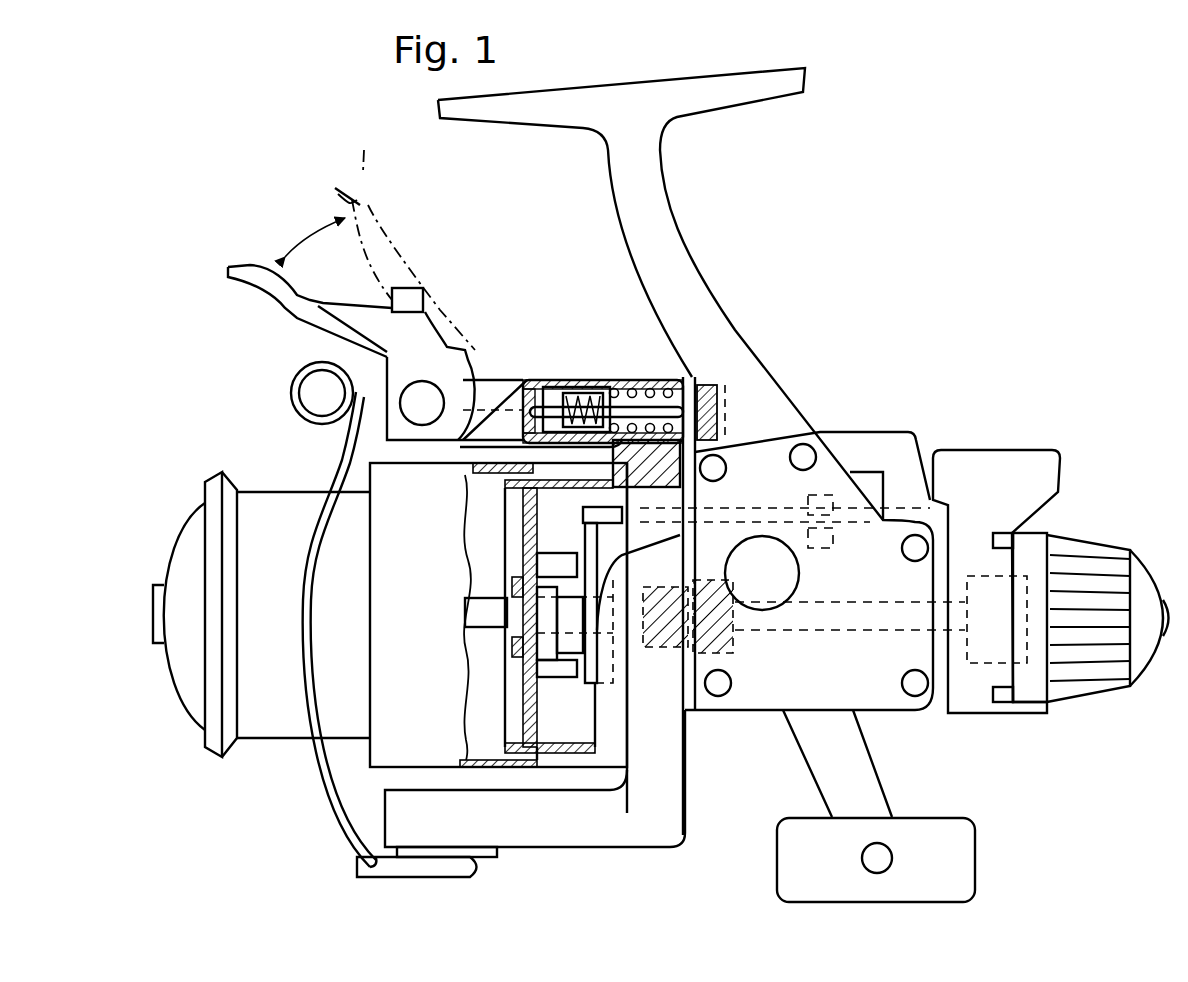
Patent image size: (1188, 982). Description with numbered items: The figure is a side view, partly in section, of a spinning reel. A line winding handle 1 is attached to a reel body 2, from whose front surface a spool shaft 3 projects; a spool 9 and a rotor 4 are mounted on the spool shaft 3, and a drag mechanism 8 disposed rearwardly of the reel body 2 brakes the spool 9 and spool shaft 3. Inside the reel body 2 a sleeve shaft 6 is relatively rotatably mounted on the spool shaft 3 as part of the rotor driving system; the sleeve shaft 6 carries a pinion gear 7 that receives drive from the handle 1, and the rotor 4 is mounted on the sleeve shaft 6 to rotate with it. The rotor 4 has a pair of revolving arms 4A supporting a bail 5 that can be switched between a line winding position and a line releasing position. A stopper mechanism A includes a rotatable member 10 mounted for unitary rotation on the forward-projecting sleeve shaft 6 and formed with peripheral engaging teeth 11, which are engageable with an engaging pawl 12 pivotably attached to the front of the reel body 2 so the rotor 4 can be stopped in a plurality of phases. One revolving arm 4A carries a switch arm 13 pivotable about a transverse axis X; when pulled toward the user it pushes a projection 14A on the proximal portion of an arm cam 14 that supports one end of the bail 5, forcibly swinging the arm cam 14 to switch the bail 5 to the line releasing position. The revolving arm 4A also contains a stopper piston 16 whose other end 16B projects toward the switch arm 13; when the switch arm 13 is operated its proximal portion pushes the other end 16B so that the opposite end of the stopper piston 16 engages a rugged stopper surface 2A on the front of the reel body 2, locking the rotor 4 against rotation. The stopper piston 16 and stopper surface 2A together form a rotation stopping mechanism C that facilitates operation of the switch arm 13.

The line winding handle 1 is at (873, 793).
The reel body 2 is at (790, 405).
The stopper surface 2A is at (700, 372).
The spool shaft 3 is at (488, 602).
The rotor 4 is at (568, 852).
The revolving arms 4A is at (527, 380).
The bail 5 is at (315, 820).
The sleeve shaft 6 is at (500, 630).
The pinion gear 7 is at (728, 655).
The drag mechanism 8 is at (1027, 570).
The spool 9 is at (275, 742).
The rotatable member 10 is at (583, 683).
The engaging teeth 11 is at (587, 597).
The engaging pawl 12 is at (620, 555).
The switch arm 13 is at (165, 272).
The arm cam 14 is at (325, 362).
The projection 14A is at (420, 287).
The stopper piston 16 is at (612, 380).
The other end of stopper piston 16B is at (473, 372).
The stopper mechanism A is at (257, 232).
The rotation stopping mechanism C is at (680, 366).
The transverse axis X is at (433, 395).